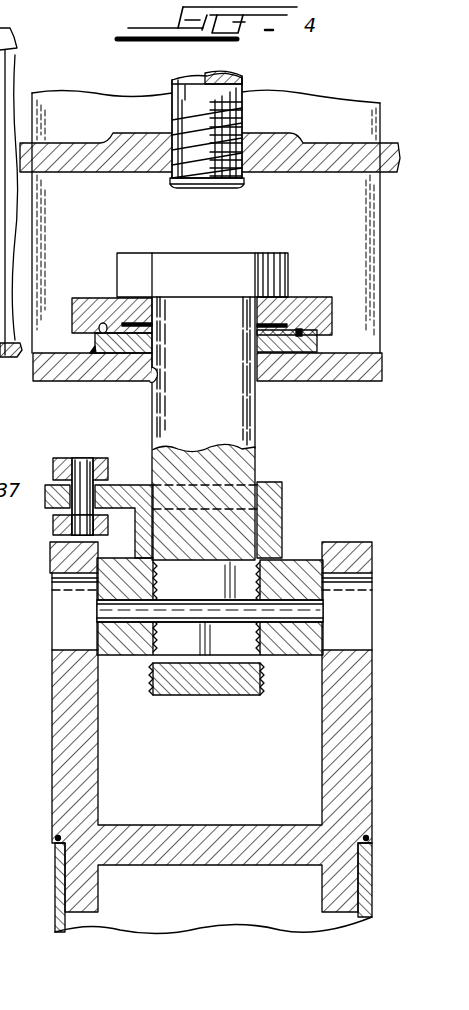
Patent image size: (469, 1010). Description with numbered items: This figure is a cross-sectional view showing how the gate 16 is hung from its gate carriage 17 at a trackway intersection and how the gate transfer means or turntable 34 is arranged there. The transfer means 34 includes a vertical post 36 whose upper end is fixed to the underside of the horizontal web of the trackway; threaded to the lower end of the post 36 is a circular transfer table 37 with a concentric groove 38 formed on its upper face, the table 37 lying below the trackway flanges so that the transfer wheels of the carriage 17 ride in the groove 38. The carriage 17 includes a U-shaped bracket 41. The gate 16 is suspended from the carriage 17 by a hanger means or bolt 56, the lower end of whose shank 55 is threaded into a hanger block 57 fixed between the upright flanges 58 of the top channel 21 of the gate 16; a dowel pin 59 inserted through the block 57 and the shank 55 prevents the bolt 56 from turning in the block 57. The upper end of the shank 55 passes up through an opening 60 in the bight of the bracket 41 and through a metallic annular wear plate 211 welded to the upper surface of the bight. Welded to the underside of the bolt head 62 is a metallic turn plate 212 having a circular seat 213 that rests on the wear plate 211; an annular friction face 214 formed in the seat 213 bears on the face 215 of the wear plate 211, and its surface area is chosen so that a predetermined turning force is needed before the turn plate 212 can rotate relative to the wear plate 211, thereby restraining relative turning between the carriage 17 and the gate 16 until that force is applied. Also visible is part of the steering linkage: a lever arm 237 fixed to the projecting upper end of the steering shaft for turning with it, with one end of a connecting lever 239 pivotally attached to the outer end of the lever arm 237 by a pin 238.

The gate 16 is at (377, 762).
The gate carriage 17 is at (300, 90).
The top channel 21 is at (52, 780).
The gate transfer means or turntable 34 is at (247, 88).
The vertical post 36 is at (177, 92).
The circular transfer table 37 is at (262, 170).
The concentric groove 38 is at (328, 143).
The U-shaped bracket 41 is at (62, 383).
The shank 55 is at (165, 460).
The hanger means or bolt 56 is at (152, 415).
The hanger block 57 is at (122, 650).
The upright flanges 58 is at (75, 670).
The dowel pin 59 is at (110, 615).
The opening 60 is at (147, 383).
The bolt head 62 is at (205, 270).
The annular wear plate 211 is at (318, 344).
The turn plate 212 is at (92, 297).
The circular seat 213 is at (100, 326).
The annular friction face 214 is at (299, 333).
The face of the wear plate 215 is at (93, 348).
The lever arm 237 is at (117, 496).
The pin 238 is at (78, 470).
The connecting lever 239 is at (54, 522).